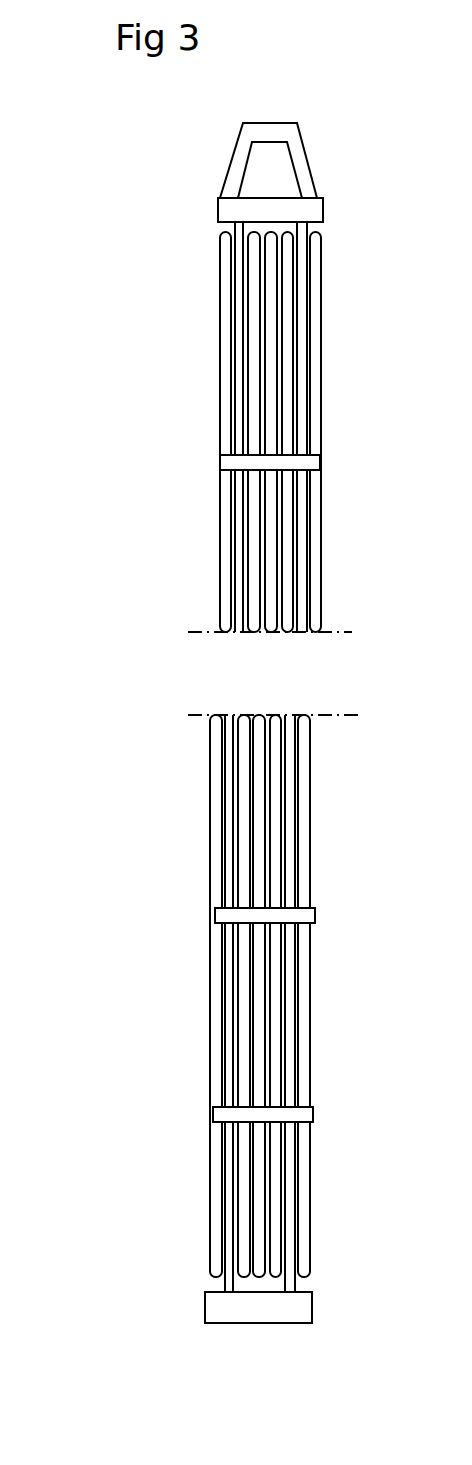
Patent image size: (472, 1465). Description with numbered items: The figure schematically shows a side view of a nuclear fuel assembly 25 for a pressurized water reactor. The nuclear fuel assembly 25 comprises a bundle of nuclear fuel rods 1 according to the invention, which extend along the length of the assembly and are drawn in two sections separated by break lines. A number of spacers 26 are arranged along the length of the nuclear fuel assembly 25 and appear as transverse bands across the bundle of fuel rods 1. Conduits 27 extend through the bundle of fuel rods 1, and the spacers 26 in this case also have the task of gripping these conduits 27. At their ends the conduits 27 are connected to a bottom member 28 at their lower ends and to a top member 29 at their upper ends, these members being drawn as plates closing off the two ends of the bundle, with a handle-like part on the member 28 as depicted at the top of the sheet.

The nuclear fuel rod 1 is at (270, 395).
The nuclear fuel assembly 25 is at (203, 312).
The spacer 26 is at (258, 460).
The conduit 27 is at (222, 222).
The bottom member 28 is at (270, 208).
The top member 29 is at (227, 1305).